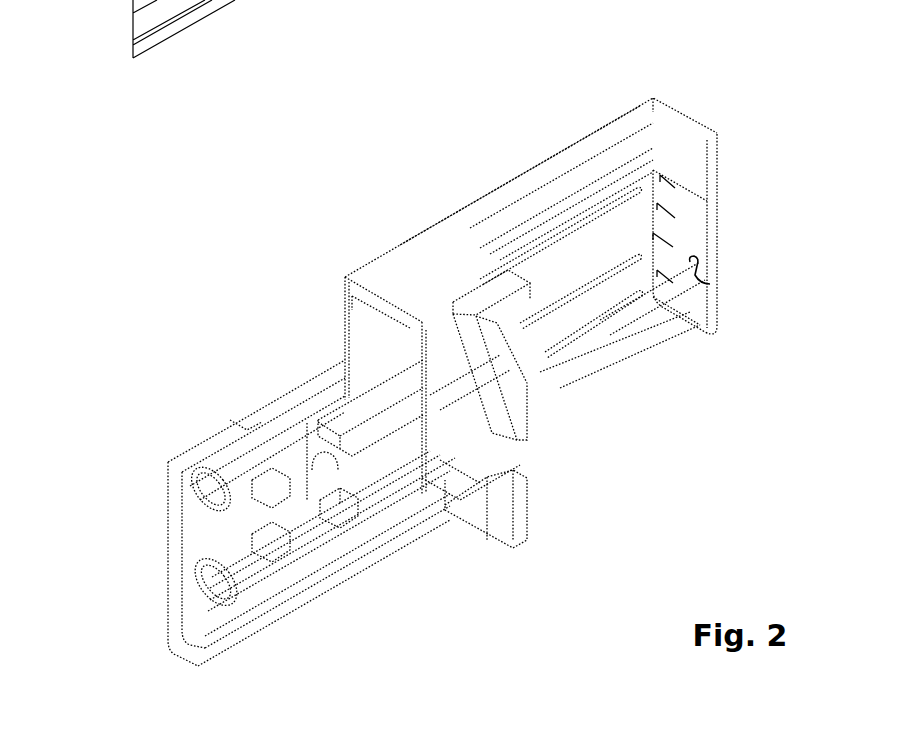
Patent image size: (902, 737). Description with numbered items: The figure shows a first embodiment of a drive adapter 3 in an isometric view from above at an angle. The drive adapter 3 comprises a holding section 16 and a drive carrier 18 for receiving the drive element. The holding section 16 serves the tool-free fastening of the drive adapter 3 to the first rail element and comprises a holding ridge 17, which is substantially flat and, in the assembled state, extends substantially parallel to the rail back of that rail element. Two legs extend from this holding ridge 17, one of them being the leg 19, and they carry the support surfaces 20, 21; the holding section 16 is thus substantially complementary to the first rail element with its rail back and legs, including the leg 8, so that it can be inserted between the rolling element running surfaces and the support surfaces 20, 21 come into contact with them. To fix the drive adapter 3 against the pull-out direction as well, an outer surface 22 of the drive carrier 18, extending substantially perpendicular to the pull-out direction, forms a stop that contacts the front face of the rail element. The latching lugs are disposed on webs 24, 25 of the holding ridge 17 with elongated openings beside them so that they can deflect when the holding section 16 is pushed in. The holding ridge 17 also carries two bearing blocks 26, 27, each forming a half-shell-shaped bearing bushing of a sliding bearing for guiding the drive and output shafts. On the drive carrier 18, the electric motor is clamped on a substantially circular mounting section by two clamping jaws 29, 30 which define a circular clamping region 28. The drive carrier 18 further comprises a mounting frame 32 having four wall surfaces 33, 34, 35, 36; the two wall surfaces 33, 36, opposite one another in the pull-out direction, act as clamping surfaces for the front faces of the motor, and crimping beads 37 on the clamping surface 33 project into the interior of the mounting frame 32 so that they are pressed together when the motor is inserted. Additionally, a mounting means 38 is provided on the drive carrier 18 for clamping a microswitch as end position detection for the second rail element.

The drive adapter 3 is at (727, 130).
The leg 8 is at (268, 29).
The holding section 16 is at (148, 367).
The holding ridge 17 is at (247, 558).
The drive carrier 18 is at (526, 138).
The leg 19 is at (227, 633).
The support surface 20 is at (210, 412).
The support surface 21 is at (157, 661).
The outer surface 22 is at (362, 333).
The web 24 is at (347, 405).
The web 25 is at (328, 523).
The bearing block 26 is at (254, 511).
The bearing block 27 is at (313, 466).
The clamping region 28 is at (472, 459).
The clamping jaw 29 is at (480, 370).
The clamping jaw 30 is at (507, 520).
The mounting frame 32 is at (733, 263).
The wall surface 33 is at (692, 282).
The wall surface 34 is at (620, 353).
The wall surface 35 is at (570, 248).
The wall surface 36 is at (447, 432).
The crimping beads 37 is at (663, 243).
The mounting means 38 is at (492, 306).